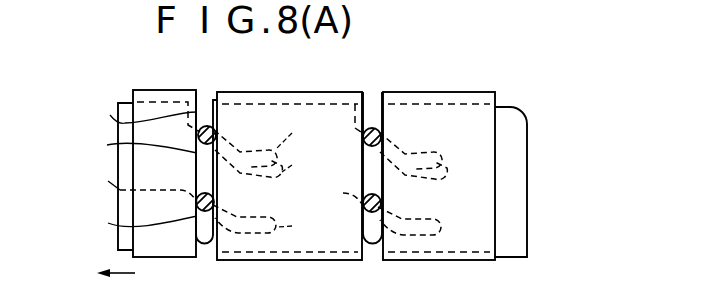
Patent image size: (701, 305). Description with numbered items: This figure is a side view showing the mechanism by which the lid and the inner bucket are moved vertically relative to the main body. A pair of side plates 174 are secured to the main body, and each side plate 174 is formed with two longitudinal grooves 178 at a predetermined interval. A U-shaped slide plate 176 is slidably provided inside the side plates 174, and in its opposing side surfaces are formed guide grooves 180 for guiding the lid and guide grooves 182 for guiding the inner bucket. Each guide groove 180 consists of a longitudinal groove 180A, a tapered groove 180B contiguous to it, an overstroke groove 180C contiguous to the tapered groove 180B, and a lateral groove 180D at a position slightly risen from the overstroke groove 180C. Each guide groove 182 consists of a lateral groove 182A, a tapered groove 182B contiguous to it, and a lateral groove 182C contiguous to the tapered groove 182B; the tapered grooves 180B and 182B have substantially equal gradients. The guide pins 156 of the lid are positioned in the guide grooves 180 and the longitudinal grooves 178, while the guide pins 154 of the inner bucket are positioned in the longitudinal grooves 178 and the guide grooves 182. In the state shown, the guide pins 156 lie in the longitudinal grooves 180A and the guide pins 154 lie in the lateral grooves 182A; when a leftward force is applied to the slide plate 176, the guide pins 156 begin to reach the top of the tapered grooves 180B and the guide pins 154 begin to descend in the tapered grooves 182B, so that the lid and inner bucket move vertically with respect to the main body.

The guide pins 154 is at (200, 188).
The guide pins 156 is at (216, 128).
The side plates 174 is at (465, 115).
The slide plate 176 is at (507, 122).
The longitudinal grooves 178 is at (210, 93).
The guide grooves 180 is at (234, 138).
The longitudinal groove 180A is at (127, 107).
The tapered groove 180B is at (123, 147).
The overstroke groove 180C is at (312, 164).
The lateral groove 180D is at (311, 132).
The guide grooves 182 is at (240, 206).
The lateral groove 182A is at (123, 186).
The tapered groove 182B is at (127, 224).
The lateral groove 182C is at (310, 225).